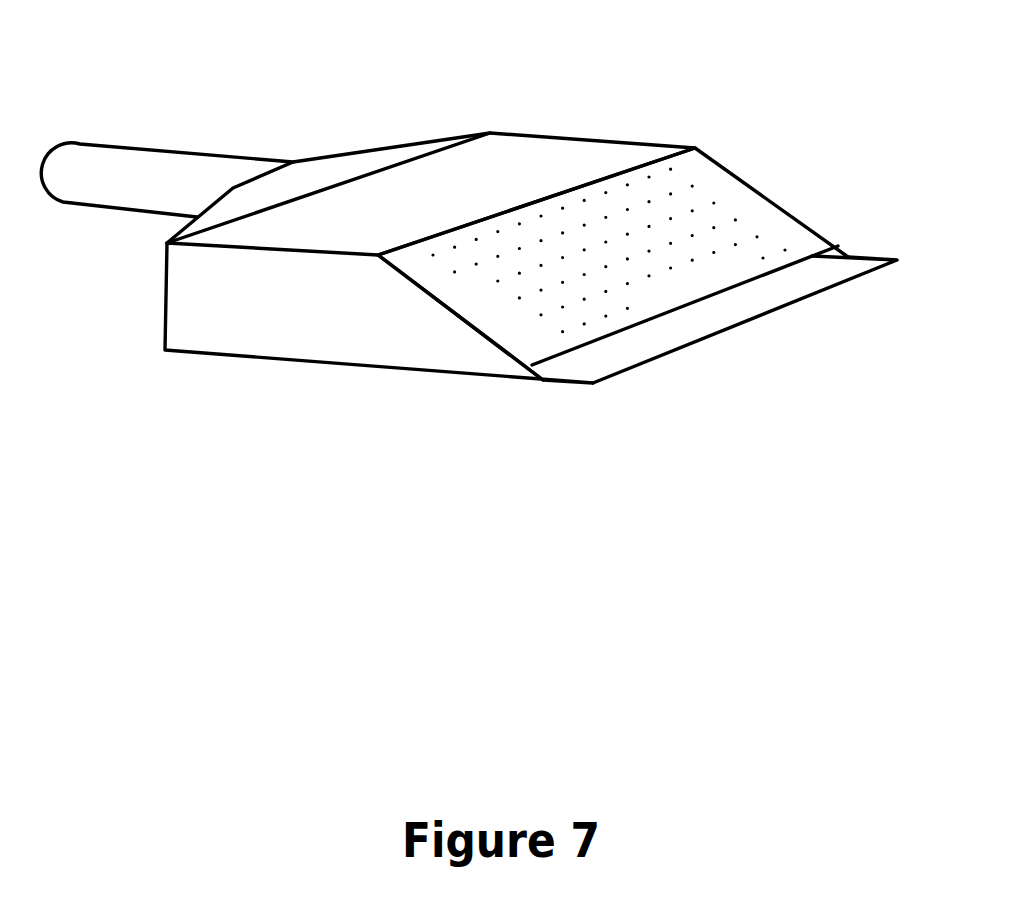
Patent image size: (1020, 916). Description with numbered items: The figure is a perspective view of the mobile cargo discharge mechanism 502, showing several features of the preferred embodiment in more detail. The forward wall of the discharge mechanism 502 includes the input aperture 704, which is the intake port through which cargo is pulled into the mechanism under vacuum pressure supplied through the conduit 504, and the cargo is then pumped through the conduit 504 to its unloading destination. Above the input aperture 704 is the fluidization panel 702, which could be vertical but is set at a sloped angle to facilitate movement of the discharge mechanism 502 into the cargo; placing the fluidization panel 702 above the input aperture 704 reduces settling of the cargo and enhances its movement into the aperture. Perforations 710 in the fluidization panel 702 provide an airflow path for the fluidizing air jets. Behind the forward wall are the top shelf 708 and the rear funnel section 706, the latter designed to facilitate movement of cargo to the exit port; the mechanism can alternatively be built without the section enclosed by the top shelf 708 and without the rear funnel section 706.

The discharge mechanism 502 is at (617, 107).
The conduit 504 is at (215, 170).
The fluidization panel 702 is at (712, 208).
The input aperture 704 is at (715, 302).
The rear funnel section 706 is at (377, 157).
The top shelf 708 is at (543, 150).
The perforations 710 is at (478, 287).